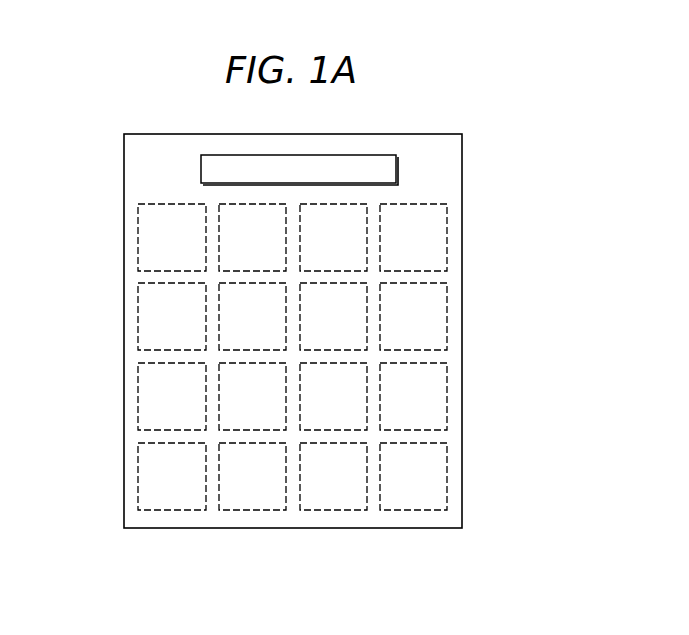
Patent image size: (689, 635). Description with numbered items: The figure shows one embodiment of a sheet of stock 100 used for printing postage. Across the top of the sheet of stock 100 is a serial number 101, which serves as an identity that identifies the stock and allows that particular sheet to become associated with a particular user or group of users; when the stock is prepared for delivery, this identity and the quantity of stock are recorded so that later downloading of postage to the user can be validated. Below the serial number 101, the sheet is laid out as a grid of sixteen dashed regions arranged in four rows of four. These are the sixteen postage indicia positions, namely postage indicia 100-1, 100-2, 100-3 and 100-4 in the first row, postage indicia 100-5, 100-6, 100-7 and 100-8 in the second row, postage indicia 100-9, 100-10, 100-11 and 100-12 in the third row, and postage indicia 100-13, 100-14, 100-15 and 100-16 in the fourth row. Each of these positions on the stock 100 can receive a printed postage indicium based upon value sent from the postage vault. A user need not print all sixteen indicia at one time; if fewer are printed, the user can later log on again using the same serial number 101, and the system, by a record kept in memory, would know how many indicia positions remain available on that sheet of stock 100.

The stock 100 is at (462, 157).
The serial number 101 is at (360, 183).
The postage indicium 100-1 is at (157, 213).
The postage indicium 100-2 is at (252, 237).
The postage indicium 100-3 is at (333, 237).
The postage indicium 100-4 is at (438, 235).
The postage indicium 100-5 is at (147, 300).
The postage indicium 100-6 is at (252, 316).
The postage indicium 100-7 is at (333, 316).
The postage indicium 100-8 is at (438, 330).
The postage indicium 100-9 is at (146, 395).
The postage indicium 100-10 is at (252, 396).
The postage indicium 100-11 is at (333, 396).
The postage indicium 100-12 is at (436, 406).
The postage indicium 100-13 is at (151, 500).
The postage indicium 100-14 is at (252, 476).
The postage indicium 100-15 is at (333, 476).
The postage indicium 100-16 is at (436, 488).